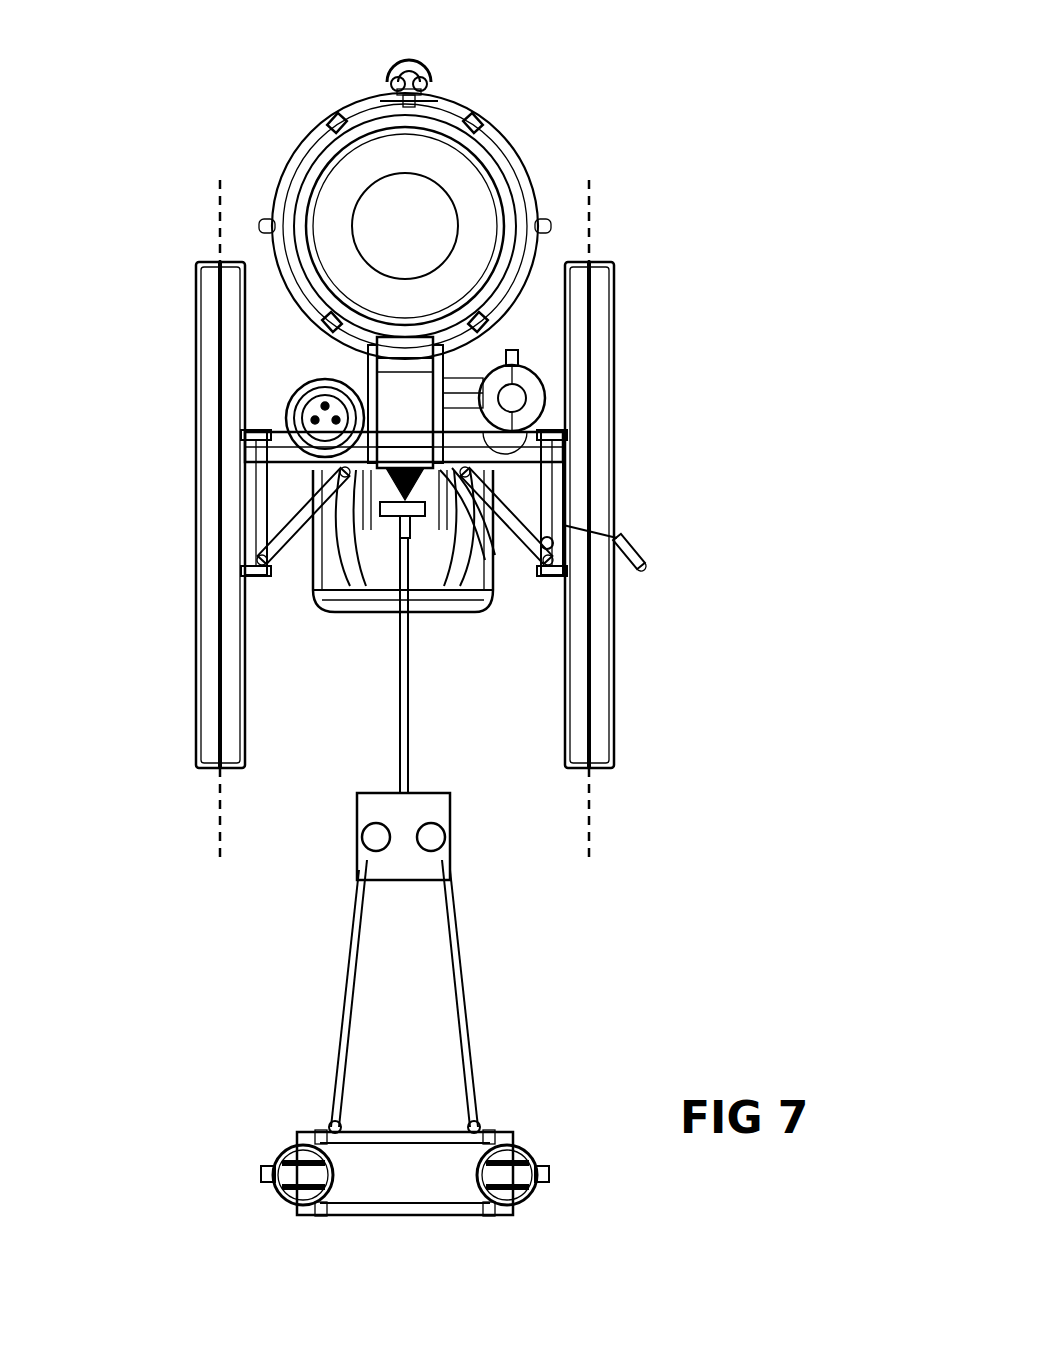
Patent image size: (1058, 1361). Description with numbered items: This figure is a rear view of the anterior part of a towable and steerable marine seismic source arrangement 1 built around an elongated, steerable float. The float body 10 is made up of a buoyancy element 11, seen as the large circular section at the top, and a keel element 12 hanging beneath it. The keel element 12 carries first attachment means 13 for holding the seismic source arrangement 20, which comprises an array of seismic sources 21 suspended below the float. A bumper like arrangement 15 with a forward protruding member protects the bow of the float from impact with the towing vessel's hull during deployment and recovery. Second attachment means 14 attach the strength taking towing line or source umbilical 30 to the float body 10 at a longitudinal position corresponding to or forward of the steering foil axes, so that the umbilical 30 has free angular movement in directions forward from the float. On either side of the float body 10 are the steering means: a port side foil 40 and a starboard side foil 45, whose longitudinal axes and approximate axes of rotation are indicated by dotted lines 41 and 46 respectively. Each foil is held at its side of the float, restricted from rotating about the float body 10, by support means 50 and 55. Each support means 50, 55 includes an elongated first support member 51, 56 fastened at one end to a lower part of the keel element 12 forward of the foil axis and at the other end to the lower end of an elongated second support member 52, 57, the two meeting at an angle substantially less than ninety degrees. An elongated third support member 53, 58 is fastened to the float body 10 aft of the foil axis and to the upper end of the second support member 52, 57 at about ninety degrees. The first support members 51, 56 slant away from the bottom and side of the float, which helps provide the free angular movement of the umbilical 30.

The lighting device 1 is at (593, 98).
The float body 10 is at (483, 117).
The buoyancy element 11 is at (500, 190).
The keel element 12 is at (407, 400).
The first attachment means 13 is at (413, 513).
The second attachment means 14 is at (470, 505).
The bumper like arrangement 15 is at (357, 610).
The seismic source arrangement 20 is at (357, 838).
The seismic source 21 is at (307, 1173).
The strength taking towing line or source umbilical 30 is at (643, 560).
The port side foil 40 is at (230, 365).
The longitudinal axis of the port foil 41 is at (192, 516).
The starboard side foil 45 is at (595, 318).
The longitudinal axis of the starboard foil 46 is at (614, 520).
The support means 50 is at (283, 487).
The first support member 51 is at (368, 482).
The second support member 52 is at (258, 517).
The third support member 53 is at (355, 462).
The support means 55 is at (545, 507).
The first support member 56 is at (547, 543).
The second support member 57 is at (548, 517).
The third support member 58 is at (560, 437).